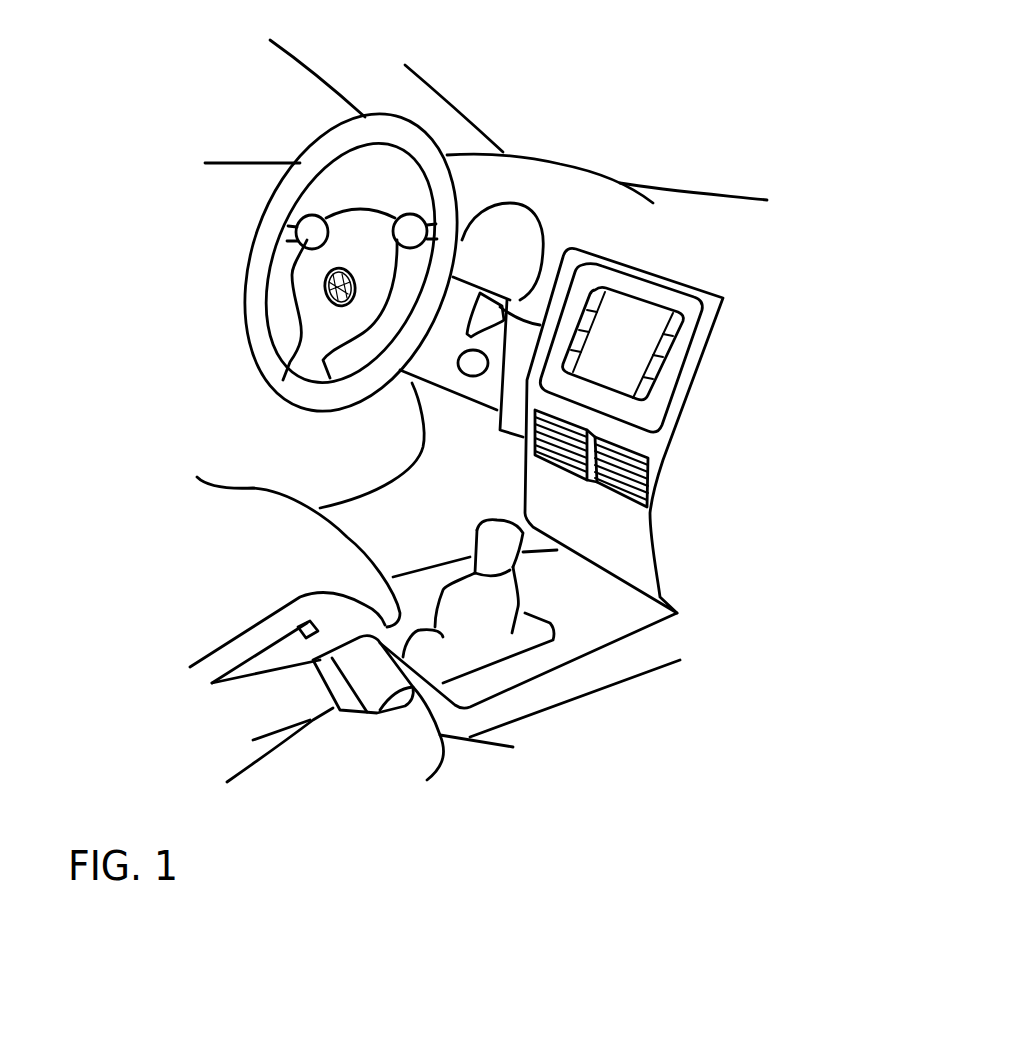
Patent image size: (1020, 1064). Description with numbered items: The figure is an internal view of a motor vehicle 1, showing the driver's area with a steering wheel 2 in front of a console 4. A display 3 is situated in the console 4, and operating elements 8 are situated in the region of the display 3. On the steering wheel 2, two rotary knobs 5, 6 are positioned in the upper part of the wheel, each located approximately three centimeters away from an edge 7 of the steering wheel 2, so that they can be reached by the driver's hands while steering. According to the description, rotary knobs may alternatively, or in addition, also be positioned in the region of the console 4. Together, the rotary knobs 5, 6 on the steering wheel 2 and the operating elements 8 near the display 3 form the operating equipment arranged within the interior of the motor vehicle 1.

The motor vehicle 1 is at (645, 96).
The steering wheel 2 is at (447, 197).
The display 3 is at (627, 330).
The console 4 is at (610, 537).
The rotary knob 5 is at (310, 232).
The rotary knob 6 is at (410, 232).
The edge of steering wheel 7 is at (247, 297).
The operating elements 8 is at (663, 347).